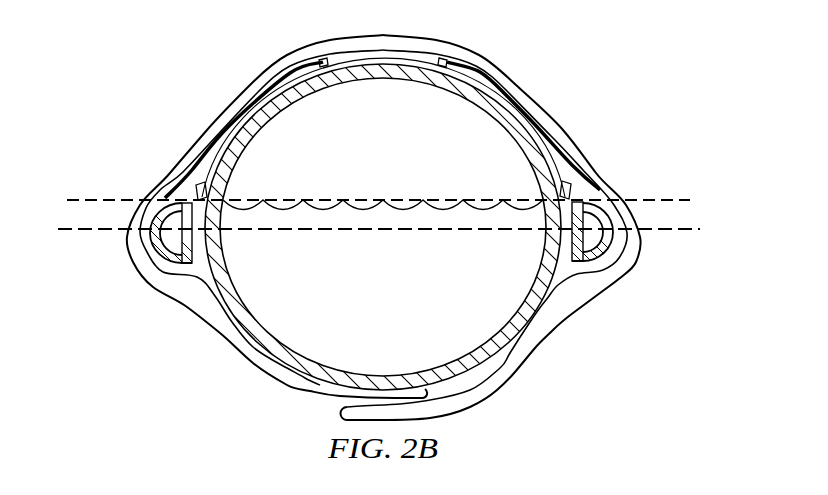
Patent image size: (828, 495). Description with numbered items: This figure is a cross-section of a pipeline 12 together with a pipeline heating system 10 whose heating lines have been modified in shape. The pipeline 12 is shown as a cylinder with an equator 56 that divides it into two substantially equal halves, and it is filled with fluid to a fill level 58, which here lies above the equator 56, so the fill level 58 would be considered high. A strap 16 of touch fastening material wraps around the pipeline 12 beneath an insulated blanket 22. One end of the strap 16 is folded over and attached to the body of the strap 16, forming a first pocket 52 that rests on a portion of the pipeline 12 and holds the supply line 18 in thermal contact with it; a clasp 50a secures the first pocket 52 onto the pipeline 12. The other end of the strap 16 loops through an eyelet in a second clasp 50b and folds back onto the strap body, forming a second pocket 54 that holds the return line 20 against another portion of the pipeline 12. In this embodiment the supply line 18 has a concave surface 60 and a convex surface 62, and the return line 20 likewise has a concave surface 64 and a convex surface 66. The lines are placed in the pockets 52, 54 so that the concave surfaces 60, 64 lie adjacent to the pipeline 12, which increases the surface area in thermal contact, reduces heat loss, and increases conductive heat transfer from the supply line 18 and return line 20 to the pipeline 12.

The pipeline heating system 10 is at (548, 380).
The pipeline 12 is at (353, 70).
The strap 16 is at (377, 58).
The supply line 18 is at (618, 253).
The return line 20 is at (150, 259).
The insulated blanket 22 is at (438, 45).
The clasp 50a is at (560, 193).
The clasp 50b is at (215, 188).
The first pocket 52 is at (580, 190).
The second pocket 54 is at (173, 185).
The equator 56 is at (662, 230).
The fill level 58 is at (110, 200).
The concave surface 60 is at (566, 225).
The convex surface 62 is at (620, 212).
The concave surface 64 is at (205, 222).
The convex surface 66 is at (147, 210).